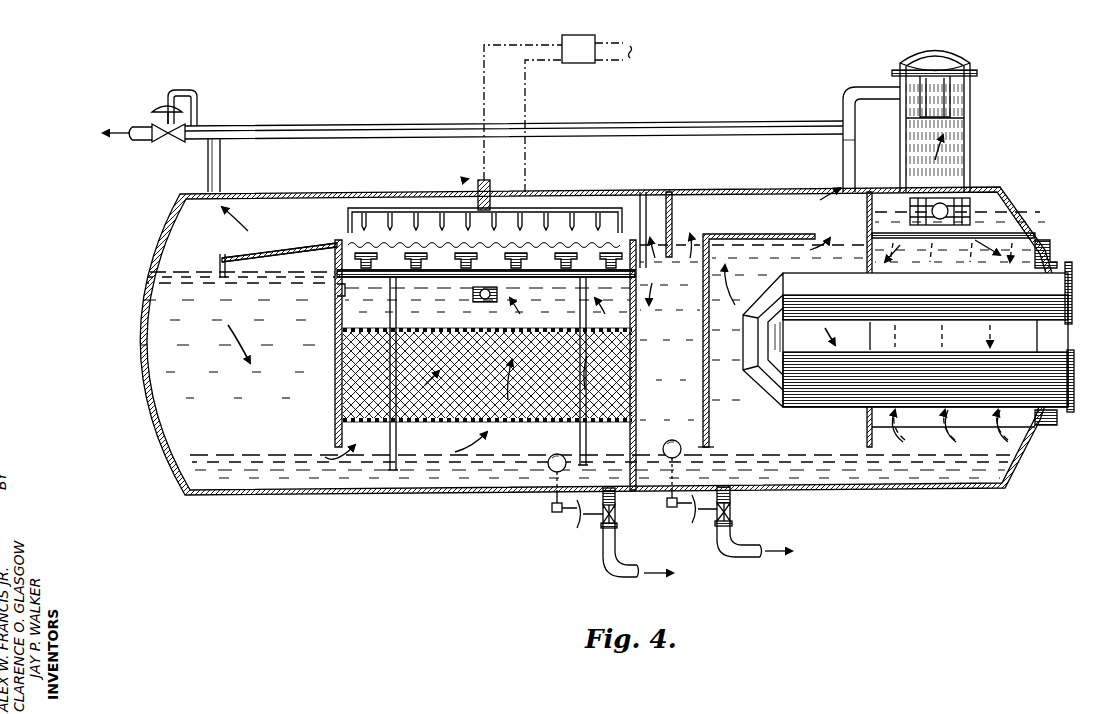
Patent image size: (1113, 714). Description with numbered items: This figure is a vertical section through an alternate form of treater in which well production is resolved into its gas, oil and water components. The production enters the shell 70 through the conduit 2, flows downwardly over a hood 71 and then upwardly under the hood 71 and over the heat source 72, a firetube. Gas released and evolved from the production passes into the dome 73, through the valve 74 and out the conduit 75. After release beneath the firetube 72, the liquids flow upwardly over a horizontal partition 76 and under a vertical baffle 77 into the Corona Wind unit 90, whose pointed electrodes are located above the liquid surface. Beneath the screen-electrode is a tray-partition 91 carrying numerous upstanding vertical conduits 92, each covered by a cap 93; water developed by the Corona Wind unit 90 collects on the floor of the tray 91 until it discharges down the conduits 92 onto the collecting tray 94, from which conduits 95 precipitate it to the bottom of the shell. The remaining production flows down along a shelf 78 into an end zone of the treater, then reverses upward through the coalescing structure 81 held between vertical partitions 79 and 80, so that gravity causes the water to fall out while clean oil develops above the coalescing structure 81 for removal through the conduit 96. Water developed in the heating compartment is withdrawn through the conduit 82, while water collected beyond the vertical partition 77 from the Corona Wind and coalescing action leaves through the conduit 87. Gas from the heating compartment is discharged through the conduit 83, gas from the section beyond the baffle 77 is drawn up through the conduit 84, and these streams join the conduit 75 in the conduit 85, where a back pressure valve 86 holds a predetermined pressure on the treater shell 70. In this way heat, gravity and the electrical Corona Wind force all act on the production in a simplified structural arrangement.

The conduit 2 is at (950, 200).
The shell 70 is at (1026, 211).
The hood 71 is at (1040, 242).
The heat source 72 is at (908, 337).
The dome 73 is at (956, 48).
The valve 74 is at (956, 80).
The conduit 75 is at (869, 92).
The horizontal partition 76 is at (729, 240).
The vertical baffle 77 is at (674, 216).
The shelf 78 is at (278, 250).
The vertical partition 79 is at (334, 361).
The vertical partition 80 is at (636, 367).
The coalescing structure 81 is at (487, 375).
The conduit 82 is at (742, 544).
The conduit 83 is at (855, 160).
The conduit 84 is at (208, 160).
The conduit 85 is at (418, 122).
The back pressure valve 86 is at (154, 113).
The conduit 87 is at (622, 561).
The Corona Wind unit 90 is at (538, 208).
The tray-partition 91 is at (340, 282).
The vertical conduits 92 is at (633, 267).
The cap 93 is at (606, 254).
The collecting tray 94 is at (340, 298).
The conduits 95 is at (396, 452).
The conduit 96 is at (483, 290).